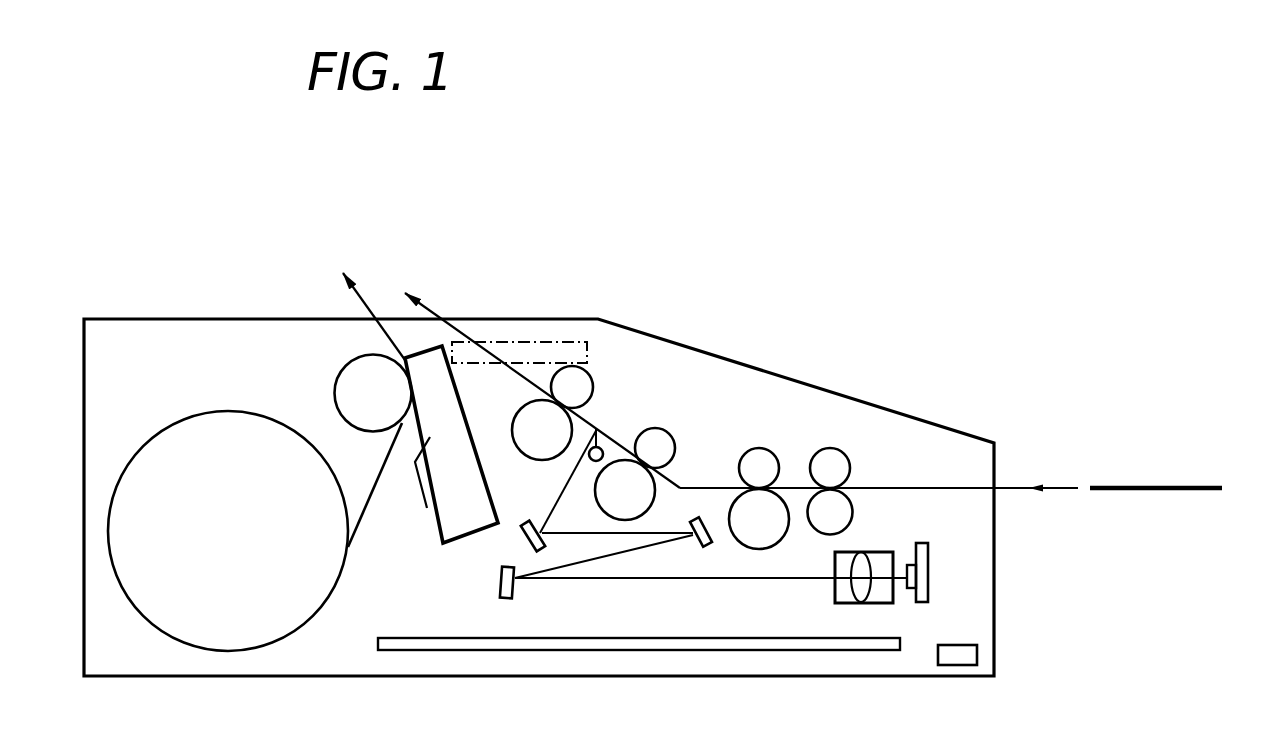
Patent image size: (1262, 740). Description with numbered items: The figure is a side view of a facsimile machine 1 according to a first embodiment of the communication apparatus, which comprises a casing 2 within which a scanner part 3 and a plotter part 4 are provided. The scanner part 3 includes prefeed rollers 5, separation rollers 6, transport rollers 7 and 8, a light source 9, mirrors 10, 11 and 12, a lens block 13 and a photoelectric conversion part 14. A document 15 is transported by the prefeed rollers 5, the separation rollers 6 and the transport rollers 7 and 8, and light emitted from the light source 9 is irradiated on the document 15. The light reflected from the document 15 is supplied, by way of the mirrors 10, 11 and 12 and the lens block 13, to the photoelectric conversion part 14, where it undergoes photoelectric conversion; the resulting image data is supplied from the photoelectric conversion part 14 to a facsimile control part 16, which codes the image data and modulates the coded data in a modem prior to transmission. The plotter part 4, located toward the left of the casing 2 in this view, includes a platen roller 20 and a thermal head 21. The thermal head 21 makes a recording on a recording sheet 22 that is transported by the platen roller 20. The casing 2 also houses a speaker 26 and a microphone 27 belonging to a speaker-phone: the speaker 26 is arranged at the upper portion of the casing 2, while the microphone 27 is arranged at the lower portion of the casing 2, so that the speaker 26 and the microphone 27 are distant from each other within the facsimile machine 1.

The facsimile machine 1 is at (893, 187).
The casing 2 is at (682, 345).
The scanner part 3 is at (858, 471).
The plotter part 4 is at (256, 360).
The prefeed rollers 5 is at (843, 522).
The separation rollers 6 is at (782, 533).
The transport roller 7 is at (656, 504).
The transport roller 8 is at (528, 452).
The light source 9 is at (591, 461).
The mirror 10 is at (522, 540).
The mirror 11 is at (712, 537).
The mirror 12 is at (498, 582).
The lens block 13 is at (837, 590).
The photoelectric conversion part 14 is at (928, 560).
The document 15 is at (1162, 487).
The facsimile control part 16 is at (652, 638).
The platen roller 20 is at (335, 385).
The thermal head 21 is at (427, 508).
The recording sheet 22 is at (150, 443).
The speaker 26 is at (587, 352).
The microphone 27 is at (955, 647).